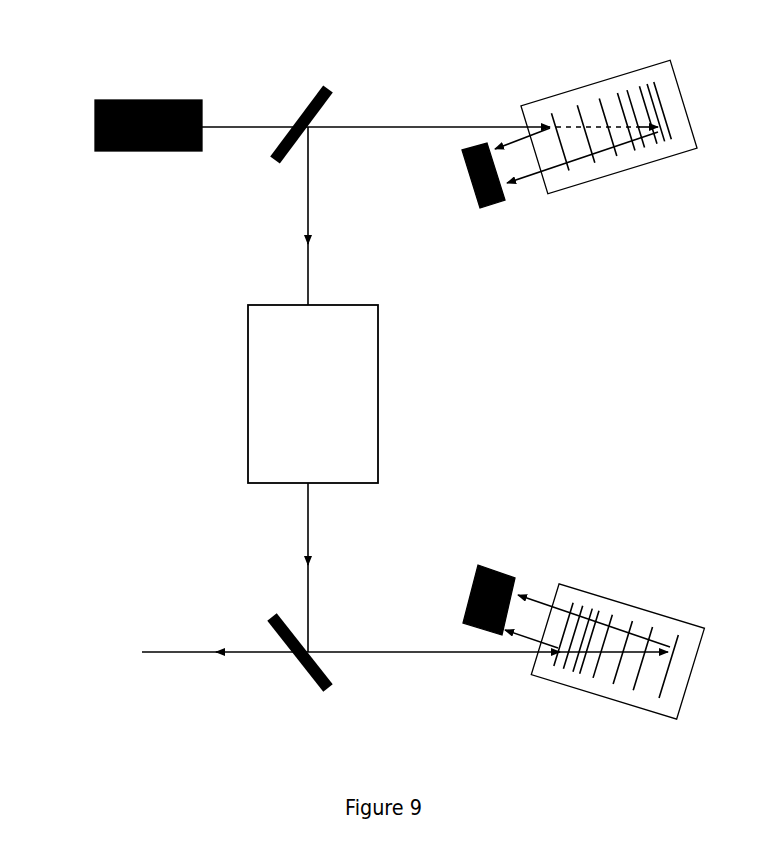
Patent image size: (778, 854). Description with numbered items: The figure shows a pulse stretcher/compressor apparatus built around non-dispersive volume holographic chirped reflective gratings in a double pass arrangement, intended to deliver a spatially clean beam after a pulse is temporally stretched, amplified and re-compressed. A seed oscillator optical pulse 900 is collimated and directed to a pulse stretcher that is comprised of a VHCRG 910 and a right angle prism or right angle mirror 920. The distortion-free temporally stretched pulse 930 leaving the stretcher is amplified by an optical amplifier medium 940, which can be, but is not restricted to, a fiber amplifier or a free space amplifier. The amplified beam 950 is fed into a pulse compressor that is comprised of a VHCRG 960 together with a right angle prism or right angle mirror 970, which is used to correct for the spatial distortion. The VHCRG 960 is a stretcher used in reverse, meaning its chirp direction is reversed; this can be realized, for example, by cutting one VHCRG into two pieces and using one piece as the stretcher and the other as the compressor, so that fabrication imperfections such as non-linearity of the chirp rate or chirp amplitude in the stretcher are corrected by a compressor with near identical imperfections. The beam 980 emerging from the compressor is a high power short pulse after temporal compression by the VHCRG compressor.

The seed oscillator optical pulse 900 is at (120, 100).
The VHCRG 910 is at (580, 92).
The right angle prism or right angle mirror 920 is at (495, 205).
The distortion-free temporally stretched pulse 930 is at (308, 222).
The optical amplifier medium 940 is at (248, 412).
The amplified beam 950 is at (308, 532).
The VHCRG 960 is at (638, 600).
The right angle prism or right angle mirror 970 is at (503, 575).
The beam 980 is at (190, 652).